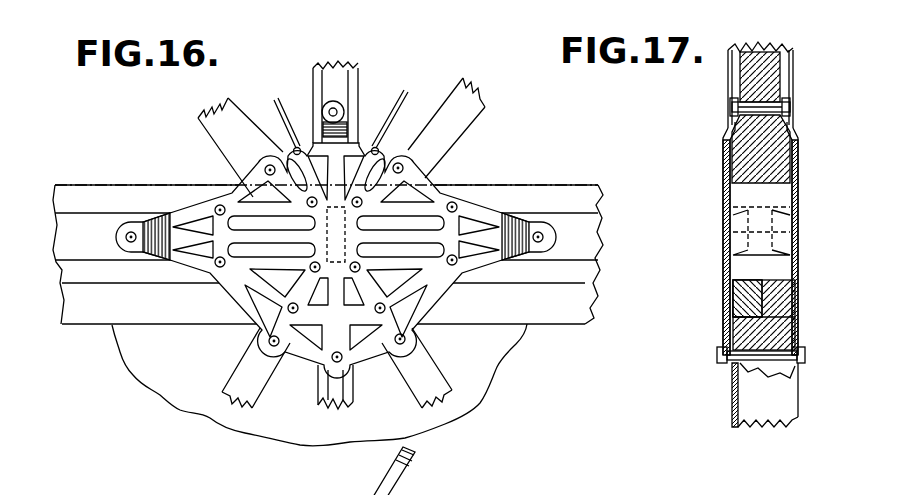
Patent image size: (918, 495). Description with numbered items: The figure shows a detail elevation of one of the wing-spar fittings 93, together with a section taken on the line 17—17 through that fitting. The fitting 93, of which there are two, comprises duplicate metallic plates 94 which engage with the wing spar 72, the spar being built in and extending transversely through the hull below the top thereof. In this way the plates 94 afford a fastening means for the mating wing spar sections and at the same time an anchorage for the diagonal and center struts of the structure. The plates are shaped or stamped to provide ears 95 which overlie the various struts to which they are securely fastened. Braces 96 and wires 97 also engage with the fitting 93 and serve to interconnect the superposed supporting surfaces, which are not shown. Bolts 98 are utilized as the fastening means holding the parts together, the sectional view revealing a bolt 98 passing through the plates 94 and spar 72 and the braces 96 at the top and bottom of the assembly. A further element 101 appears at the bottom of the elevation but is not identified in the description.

In FIG. 16, the section line 17 is at (333, 62).
In FIG. 16, the wing spar 72 is at (578, 186).
In FIG. 17, the wing spar 72 is at (785, 295).
In FIG. 16, the fitting 93 is at (428, 179).
In FIG. 17, the fitting 93 is at (800, 232).
In FIG. 16, the metallic plate 94 is at (262, 212).
In FIG. 17, the metallic plate 94 is at (798, 160).
In FIG. 16, the ear 95 is at (141, 226).
In FIG. 16, the brace 96 is at (247, 117).
In FIG. 17, the brace 96 is at (768, 50).
In FIG. 16, the wire 97 is at (360, 109).
In FIG. 16, the bolt 98 is at (325, 110).
In FIG. 17, the bolt 98 is at (762, 100).
In FIG. 16, the rod 101 is at (427, 471).